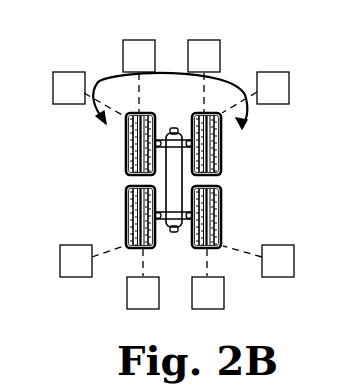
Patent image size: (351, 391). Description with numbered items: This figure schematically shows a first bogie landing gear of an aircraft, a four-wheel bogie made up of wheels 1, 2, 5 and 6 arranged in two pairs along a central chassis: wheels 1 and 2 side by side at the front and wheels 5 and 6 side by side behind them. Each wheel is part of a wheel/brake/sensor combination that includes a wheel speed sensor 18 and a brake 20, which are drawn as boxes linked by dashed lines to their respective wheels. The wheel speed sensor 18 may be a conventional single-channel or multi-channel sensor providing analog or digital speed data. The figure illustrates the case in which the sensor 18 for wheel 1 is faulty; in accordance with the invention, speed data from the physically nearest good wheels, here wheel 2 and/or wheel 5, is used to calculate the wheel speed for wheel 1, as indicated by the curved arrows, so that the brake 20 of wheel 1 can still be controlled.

The wheel 1 is at (100, 127).
The wheel 2 is at (215, 144).
The wheel 5 is at (103, 157).
The wheel 6 is at (216, 217).
The wheel speed sensor 18 is at (122, 58).
The brake 20 is at (52, 80).